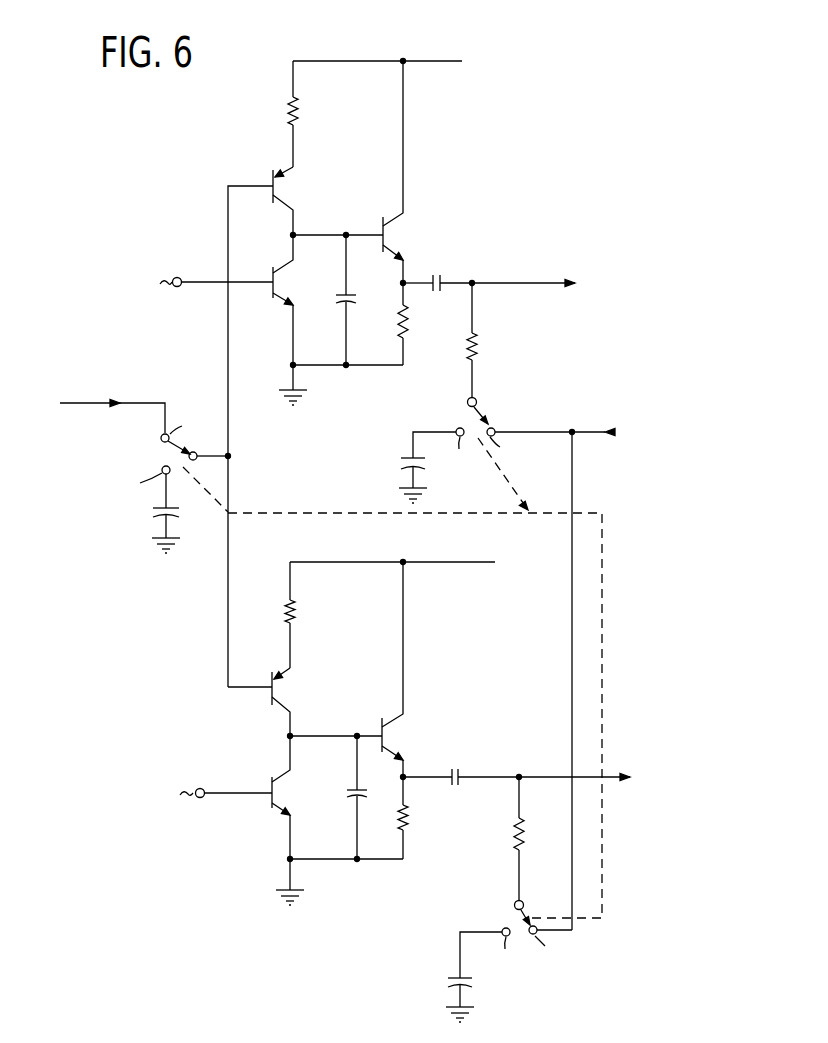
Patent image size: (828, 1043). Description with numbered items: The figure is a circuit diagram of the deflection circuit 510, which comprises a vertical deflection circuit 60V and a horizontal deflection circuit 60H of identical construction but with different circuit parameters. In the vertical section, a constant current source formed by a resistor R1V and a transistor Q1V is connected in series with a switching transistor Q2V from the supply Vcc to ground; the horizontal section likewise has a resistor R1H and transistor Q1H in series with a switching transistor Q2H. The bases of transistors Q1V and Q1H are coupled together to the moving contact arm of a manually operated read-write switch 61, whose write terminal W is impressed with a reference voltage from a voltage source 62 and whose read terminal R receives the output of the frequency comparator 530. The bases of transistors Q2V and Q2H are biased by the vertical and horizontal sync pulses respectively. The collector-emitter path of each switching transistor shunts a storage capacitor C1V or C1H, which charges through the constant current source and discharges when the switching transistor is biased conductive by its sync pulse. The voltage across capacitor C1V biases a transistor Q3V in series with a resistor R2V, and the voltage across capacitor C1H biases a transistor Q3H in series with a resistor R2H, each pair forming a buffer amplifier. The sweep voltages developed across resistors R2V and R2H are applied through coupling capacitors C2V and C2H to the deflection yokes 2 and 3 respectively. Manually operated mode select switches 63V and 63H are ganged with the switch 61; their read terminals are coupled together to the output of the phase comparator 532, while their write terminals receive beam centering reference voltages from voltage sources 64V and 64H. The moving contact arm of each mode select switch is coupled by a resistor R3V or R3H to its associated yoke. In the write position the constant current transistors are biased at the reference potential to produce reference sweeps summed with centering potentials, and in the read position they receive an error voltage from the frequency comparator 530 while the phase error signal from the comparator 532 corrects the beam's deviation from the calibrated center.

The deflection circuit 510 is at (404, 31).
The vertical deflection circuit 60V is at (174, 167).
The horizontal deflection circuit 60H is at (160, 677).
The manually operated switch 61 is at (170, 450).
The voltage source 62 is at (154, 517).
The mode select switch 63V is at (480, 416).
The mode select switch 63H is at (515, 914).
The voltage source 64V is at (398, 470).
The voltage source 64H is at (446, 988).
The resistor R1V is at (299, 113).
The transistor Q1V is at (278, 195).
The switching transistor Q2V is at (268, 294).
The transistor Q3V is at (388, 247).
The storage capacitor C1V is at (355, 305).
The coupling capacitor C2V is at (442, 274).
The resistor R2V is at (409, 330).
The resistor R3V is at (478, 346).
The resistor R1H is at (296, 616).
The transistor Q1H is at (276, 697).
The switching transistor Q2H is at (277, 801).
The transistor Q3H is at (387, 748).
The storage capacitor C1H is at (362, 800).
The coupling capacitor C2H is at (474, 758).
The resistor R2H is at (409, 826).
The resistor R3H is at (512, 832).
The frequency comparator 530 is at (67, 368).
The phase comparator 532 is at (673, 457).
The deflection yoke 2 is at (624, 307).
The deflection yoke 3 is at (700, 791).